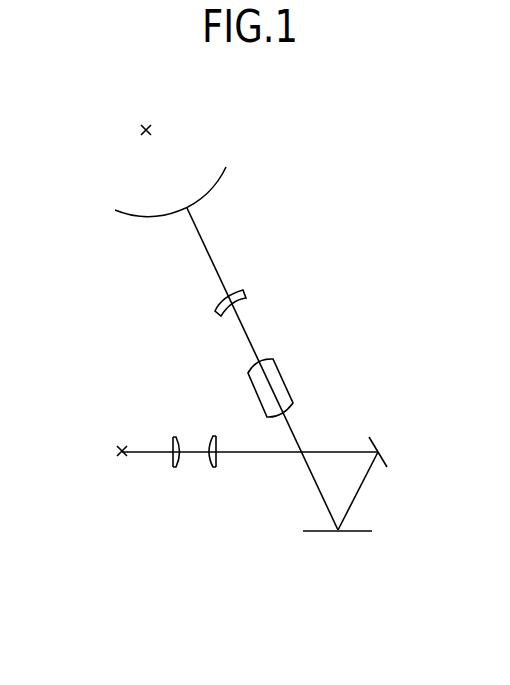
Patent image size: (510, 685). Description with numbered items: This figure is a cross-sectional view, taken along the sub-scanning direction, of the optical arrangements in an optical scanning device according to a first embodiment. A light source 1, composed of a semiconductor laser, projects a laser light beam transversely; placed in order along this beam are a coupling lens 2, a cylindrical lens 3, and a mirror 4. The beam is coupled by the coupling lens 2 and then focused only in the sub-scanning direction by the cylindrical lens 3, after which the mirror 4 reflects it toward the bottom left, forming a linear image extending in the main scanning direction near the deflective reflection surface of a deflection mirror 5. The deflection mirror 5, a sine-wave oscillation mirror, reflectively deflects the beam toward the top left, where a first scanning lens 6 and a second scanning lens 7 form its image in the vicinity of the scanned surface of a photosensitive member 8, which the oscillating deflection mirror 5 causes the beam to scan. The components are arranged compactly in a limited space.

The light source 1 is at (117, 458).
The coupling lens 2 is at (172, 468).
The cylindrical lens 3 is at (207, 468).
The mirror 4 is at (383, 462).
The deflection mirror 5 is at (360, 533).
The first scanning lens 6 is at (282, 373).
The second scanning lens 7 is at (245, 292).
The photosensitive member 8 is at (216, 185).